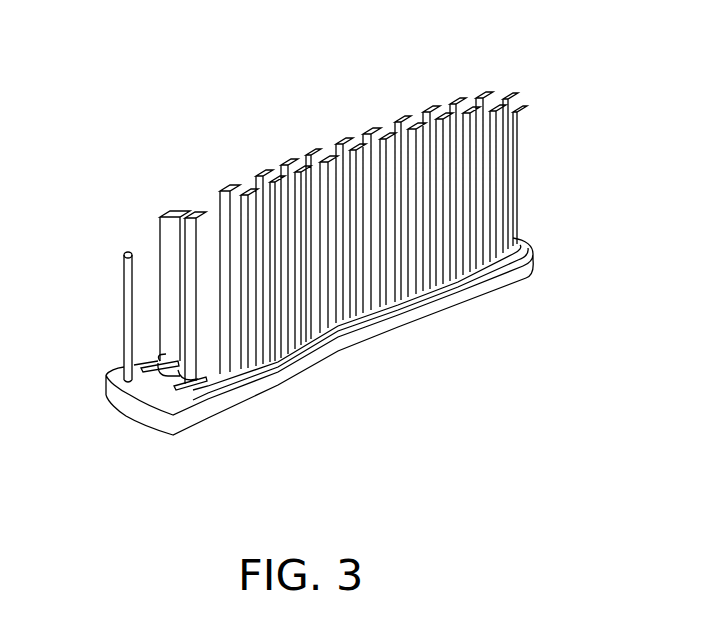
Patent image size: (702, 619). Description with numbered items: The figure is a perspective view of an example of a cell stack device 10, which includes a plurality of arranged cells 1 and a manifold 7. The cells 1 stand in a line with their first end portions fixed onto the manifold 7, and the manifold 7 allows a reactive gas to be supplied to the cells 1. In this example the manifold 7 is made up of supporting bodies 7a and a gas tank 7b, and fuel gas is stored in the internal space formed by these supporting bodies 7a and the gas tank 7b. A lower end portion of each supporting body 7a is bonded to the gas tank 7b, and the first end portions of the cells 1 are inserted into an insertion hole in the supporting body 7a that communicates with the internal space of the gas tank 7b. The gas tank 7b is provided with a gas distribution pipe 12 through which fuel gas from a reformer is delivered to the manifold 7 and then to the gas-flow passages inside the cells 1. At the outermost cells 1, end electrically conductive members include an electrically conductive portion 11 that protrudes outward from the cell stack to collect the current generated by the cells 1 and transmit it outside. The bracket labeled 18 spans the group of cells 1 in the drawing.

The cell stack device 10 is at (144, 79).
The cell 1 is at (492, 138).
The fin group 18 is at (446, 77).
The manifold 7 is at (330, 447).
The supporting body 7a is at (232, 375).
The gas tank 7b is at (287, 367).
The electrically conductive portion 11 is at (166, 378).
The gas distribution pipe 12 is at (116, 260).